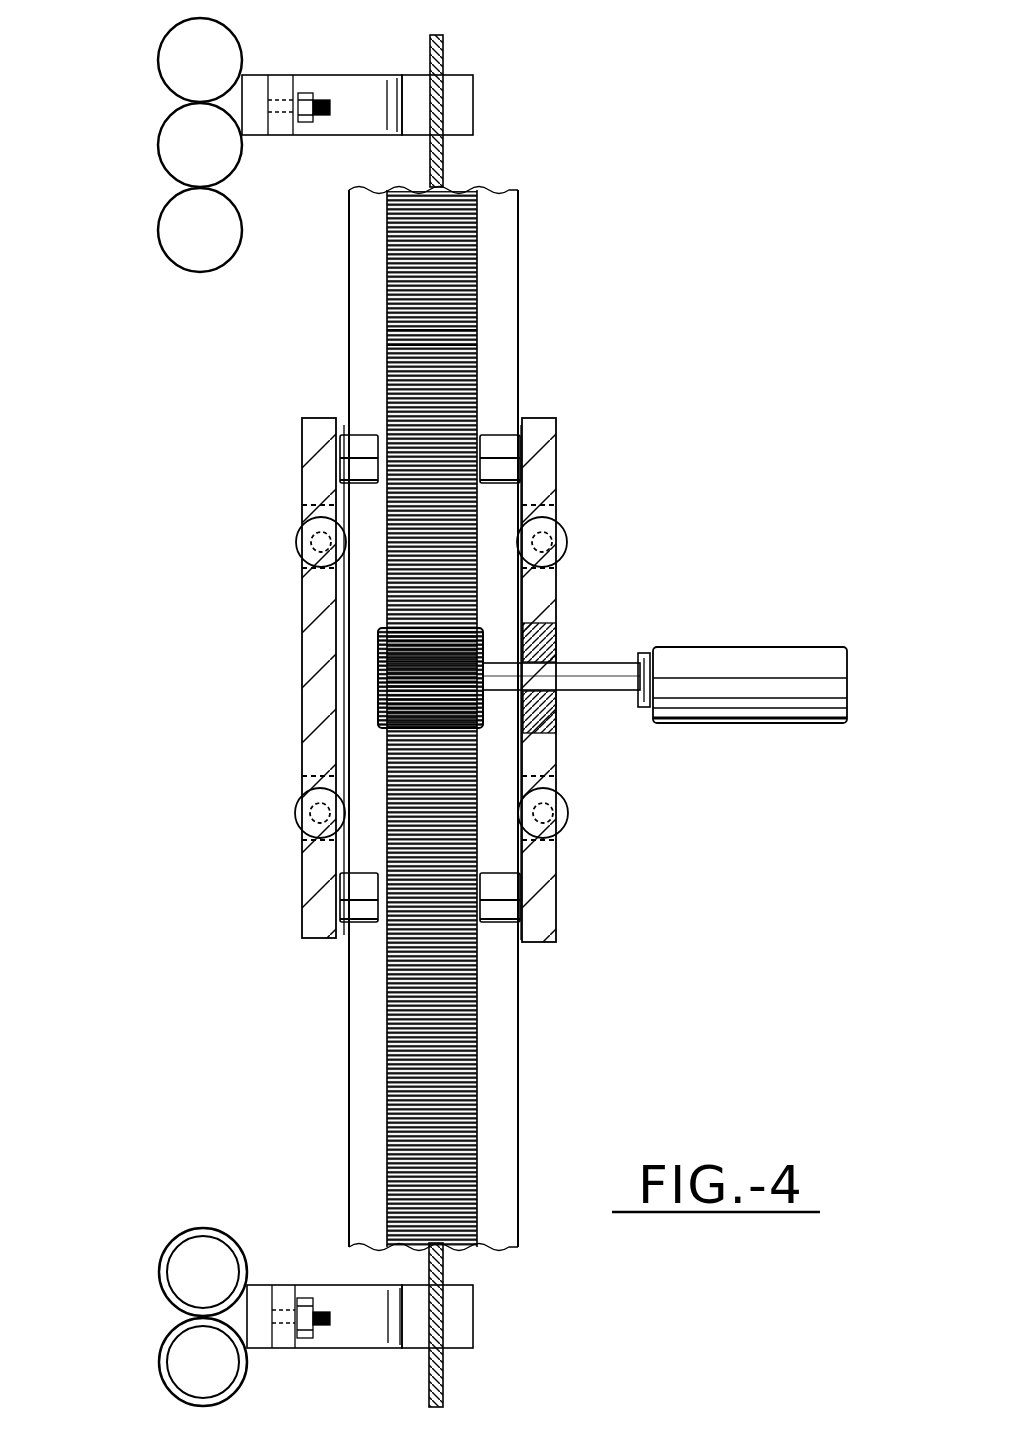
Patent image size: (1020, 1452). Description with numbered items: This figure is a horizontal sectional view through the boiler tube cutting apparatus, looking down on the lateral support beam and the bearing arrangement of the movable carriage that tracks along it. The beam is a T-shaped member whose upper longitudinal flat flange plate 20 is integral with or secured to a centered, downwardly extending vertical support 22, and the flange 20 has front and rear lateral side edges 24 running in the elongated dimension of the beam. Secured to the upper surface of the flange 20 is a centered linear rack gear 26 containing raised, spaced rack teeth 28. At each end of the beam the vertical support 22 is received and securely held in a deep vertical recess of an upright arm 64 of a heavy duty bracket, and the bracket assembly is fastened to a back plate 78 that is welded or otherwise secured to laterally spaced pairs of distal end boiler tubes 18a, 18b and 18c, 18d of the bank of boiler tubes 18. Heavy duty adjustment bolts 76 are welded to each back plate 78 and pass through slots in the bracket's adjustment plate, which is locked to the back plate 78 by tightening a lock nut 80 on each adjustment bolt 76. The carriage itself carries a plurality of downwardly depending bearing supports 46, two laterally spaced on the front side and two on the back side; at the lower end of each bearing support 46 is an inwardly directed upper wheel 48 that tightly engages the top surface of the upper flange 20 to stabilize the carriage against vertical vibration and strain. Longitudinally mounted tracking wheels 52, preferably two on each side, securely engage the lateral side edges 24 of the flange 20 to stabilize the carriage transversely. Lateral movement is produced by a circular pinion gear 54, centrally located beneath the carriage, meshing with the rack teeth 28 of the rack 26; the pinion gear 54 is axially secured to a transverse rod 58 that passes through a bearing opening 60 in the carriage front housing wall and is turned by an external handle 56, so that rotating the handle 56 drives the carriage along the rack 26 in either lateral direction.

The boiler tubes 18 is at (158, 223).
The distal end boiler tube 18a is at (160, 1350).
The distal end boiler tube 18b is at (160, 1262).
The distal end boiler tube 18c is at (158, 140).
The distal end boiler tube 18d is at (158, 58).
The upper longitudinal flat flange plate 20 is at (520, 205).
The vertical support 22 is at (445, 165).
The lateral side edges 24 is at (349, 222).
The linear rack gear 26 is at (477, 292).
The rack teeth 28 is at (477, 346).
The bearing supports 46 is at (302, 470).
The upper wheel 48 is at (356, 435).
The tracking wheel 52 is at (297, 540).
The pinion gear 54 is at (378, 680).
The external handle 56 is at (770, 647).
The transverse rod 58 is at (613, 666).
The bearing opening 60 is at (556, 690).
The upright arm 64 is at (465, 100).
The adjustment bolt 76 is at (321, 100).
The back plate 78 is at (268, 125).
The lock nut 80 is at (305, 93).